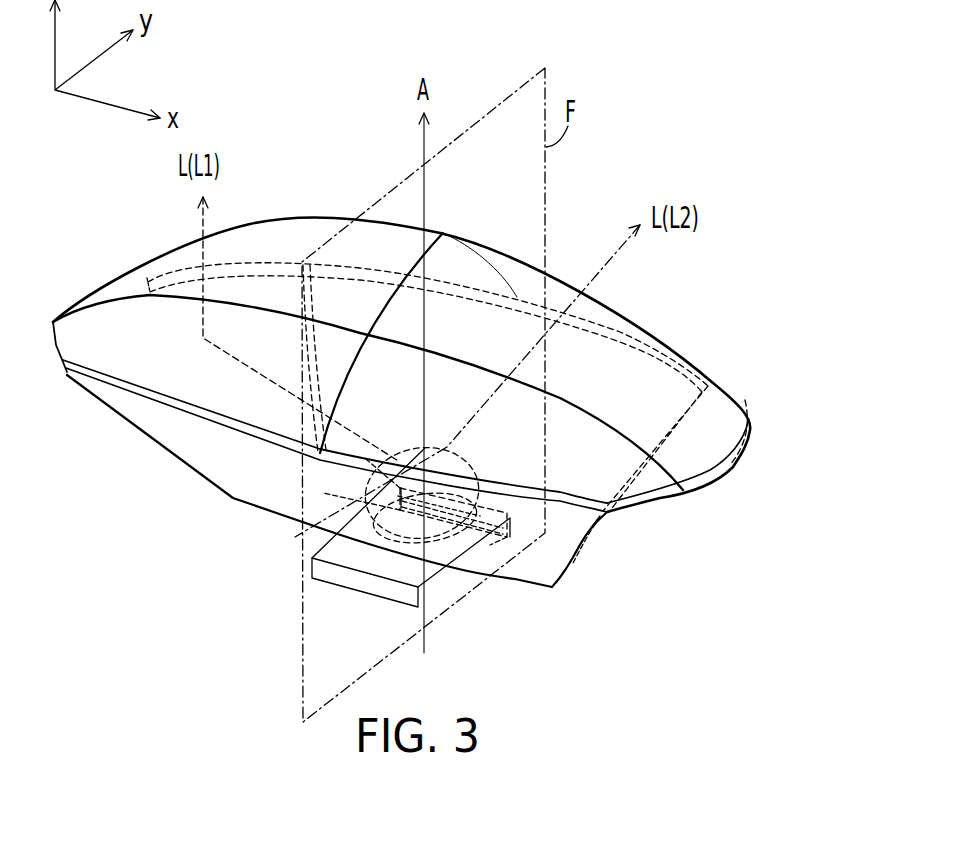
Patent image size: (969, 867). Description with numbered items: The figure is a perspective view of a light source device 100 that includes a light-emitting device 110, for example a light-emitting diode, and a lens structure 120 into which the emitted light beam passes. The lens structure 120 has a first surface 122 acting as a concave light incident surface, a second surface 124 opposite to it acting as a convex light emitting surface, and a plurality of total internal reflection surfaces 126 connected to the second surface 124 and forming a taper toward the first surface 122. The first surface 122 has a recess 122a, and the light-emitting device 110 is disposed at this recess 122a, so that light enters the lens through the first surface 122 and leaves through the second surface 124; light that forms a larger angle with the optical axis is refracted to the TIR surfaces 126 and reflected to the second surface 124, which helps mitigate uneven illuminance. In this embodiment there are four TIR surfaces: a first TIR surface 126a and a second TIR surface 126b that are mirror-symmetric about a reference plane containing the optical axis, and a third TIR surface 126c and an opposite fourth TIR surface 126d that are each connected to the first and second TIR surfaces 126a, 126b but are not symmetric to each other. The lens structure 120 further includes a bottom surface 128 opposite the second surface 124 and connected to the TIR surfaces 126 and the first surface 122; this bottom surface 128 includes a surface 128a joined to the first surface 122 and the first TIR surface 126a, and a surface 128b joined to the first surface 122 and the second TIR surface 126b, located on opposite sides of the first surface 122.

The light source device 100 is at (798, 668).
The light-emitting device 110 is at (410, 575).
The lens structure 120 is at (670, 282).
The first surface 122 is at (407, 498).
The recess 122a is at (405, 522).
The second surface 124 is at (453, 380).
The total internal reflection surfaces 126 is at (408, 402).
The first TIR surface 126a is at (608, 528).
The second TIR surface 126b is at (162, 427).
The third TIR surface 126c is at (612, 375).
The fourth TIR surface 126d is at (280, 470).
The bottom surface 128 is at (325, 517).
The surface 128a is at (533, 560).
The surface 128b is at (309, 501).